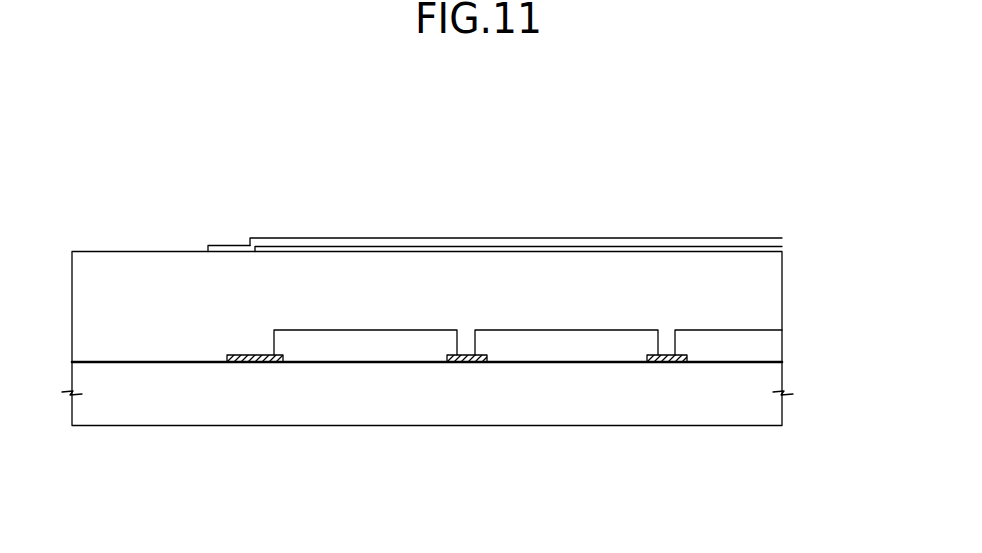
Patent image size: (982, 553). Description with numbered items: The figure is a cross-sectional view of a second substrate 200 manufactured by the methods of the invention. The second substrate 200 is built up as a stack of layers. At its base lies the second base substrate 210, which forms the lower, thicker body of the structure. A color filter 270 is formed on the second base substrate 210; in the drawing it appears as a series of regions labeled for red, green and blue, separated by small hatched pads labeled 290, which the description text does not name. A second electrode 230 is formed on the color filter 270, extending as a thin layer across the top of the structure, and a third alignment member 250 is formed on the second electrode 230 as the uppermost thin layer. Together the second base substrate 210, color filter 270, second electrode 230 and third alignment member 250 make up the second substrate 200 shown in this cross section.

The second substrate 200 is at (497, 136).
The second base substrate 210 is at (776, 380).
The second electrode 230 is at (782, 247).
The third alignment member 250 is at (782, 240).
The color filter 270 is at (776, 345).
The black matrix pads 290 is at (255, 362).